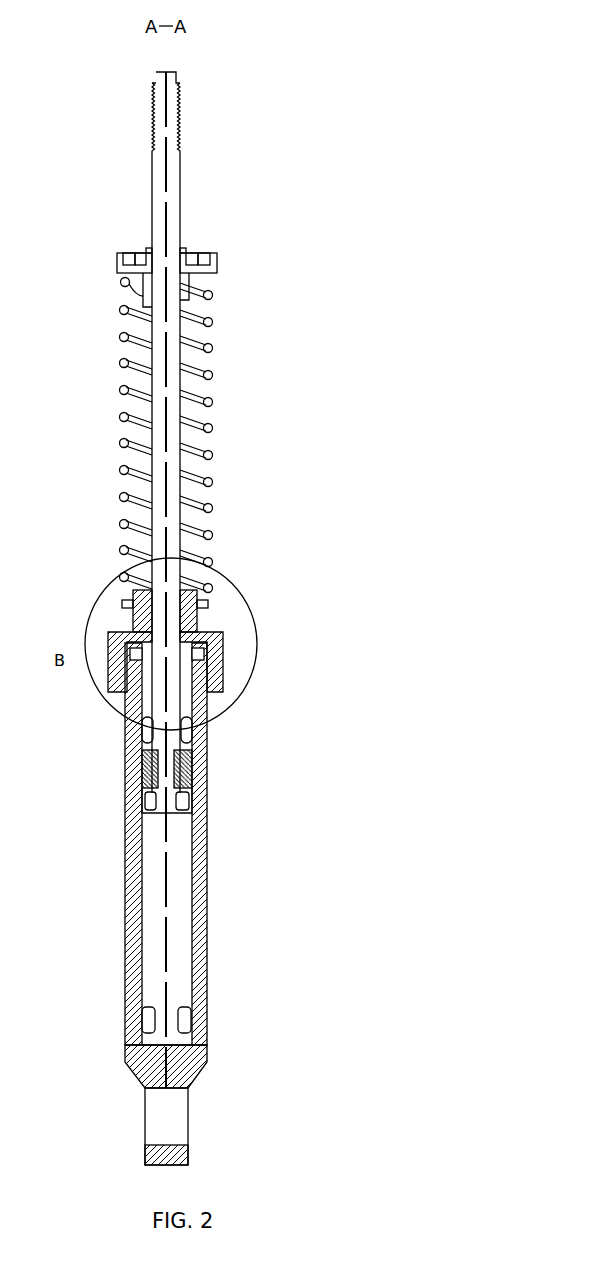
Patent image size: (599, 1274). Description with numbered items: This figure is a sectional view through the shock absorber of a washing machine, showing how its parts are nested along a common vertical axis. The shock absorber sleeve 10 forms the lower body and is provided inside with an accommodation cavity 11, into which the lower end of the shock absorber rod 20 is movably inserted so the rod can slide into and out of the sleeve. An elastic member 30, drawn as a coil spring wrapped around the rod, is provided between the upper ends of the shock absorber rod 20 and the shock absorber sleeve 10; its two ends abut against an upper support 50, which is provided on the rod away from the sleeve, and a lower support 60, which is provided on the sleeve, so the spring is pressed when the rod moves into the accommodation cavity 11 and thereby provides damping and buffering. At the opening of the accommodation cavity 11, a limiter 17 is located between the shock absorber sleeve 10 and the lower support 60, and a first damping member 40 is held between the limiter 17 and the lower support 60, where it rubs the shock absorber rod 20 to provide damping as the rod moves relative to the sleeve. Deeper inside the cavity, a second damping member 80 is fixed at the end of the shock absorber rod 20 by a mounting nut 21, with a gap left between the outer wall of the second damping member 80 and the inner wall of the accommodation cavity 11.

The shock absorber rod 20 is at (173, 155).
The upper support 50 is at (217, 265).
The elastic member 30 is at (215, 398).
The first damping member 40 is at (147, 630).
The lower support 60 is at (202, 632).
The limiter 17 is at (222, 640).
The shock absorber sleeve 10 is at (203, 743).
The second damping member 80 is at (185, 770).
The mounting nut 21 is at (187, 803).
The accommodation cavity 11 is at (175, 955).